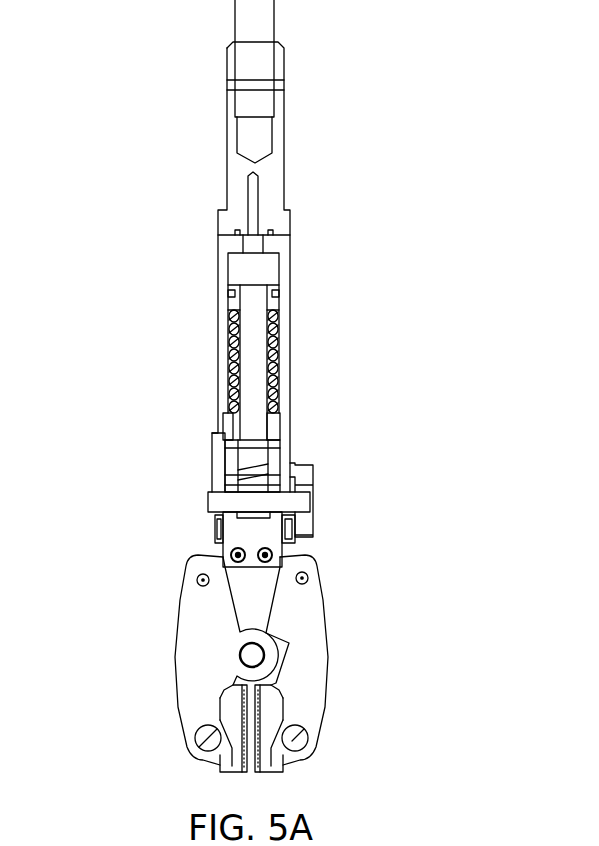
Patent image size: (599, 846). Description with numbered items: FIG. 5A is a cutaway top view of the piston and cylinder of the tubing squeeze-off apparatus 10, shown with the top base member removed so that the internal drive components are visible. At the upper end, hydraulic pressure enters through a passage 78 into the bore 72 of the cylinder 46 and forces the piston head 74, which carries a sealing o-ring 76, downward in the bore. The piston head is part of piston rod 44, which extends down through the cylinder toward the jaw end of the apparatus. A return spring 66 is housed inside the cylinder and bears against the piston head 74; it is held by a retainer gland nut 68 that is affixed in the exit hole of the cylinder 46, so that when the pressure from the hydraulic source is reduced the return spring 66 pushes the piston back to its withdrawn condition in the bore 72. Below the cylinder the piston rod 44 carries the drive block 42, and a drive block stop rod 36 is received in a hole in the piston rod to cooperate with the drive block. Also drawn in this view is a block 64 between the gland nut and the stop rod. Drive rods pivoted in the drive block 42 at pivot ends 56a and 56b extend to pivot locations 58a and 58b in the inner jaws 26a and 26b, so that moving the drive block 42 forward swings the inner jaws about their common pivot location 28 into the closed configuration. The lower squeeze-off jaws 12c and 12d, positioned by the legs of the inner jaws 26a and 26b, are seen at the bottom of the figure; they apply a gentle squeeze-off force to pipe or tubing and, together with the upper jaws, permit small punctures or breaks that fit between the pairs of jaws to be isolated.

The tubing squeeze-off apparatus 10 is at (343, 158).
The lower squeeze-off jaw 12c is at (270, 765).
The lower squeeze-off jaw 12d is at (233, 765).
The inner jaw 26a is at (232, 634).
The inner jaw 26b is at (310, 634).
The pivot location 28 is at (252, 655).
The drive block stop rod 36 is at (208, 503).
The drive block 42 is at (238, 536).
The piston rod 44 is at (253, 347).
The cylinder 46 is at (218, 252).
The pivot end of drive rod 56a is at (238, 555).
The pivot end of drive rod 56b is at (265, 555).
The pivot location 58a is at (203, 580).
The pivot location 58b is at (302, 578).
The guide block 64 is at (252, 455).
The return spring 66 is at (278, 402).
The retainer gland nut 68 is at (230, 422).
The bore 72 is at (235, 310).
The piston head 74 is at (254, 297).
The o-ring 76 is at (279, 294).
The passage 78 is at (254, 202).